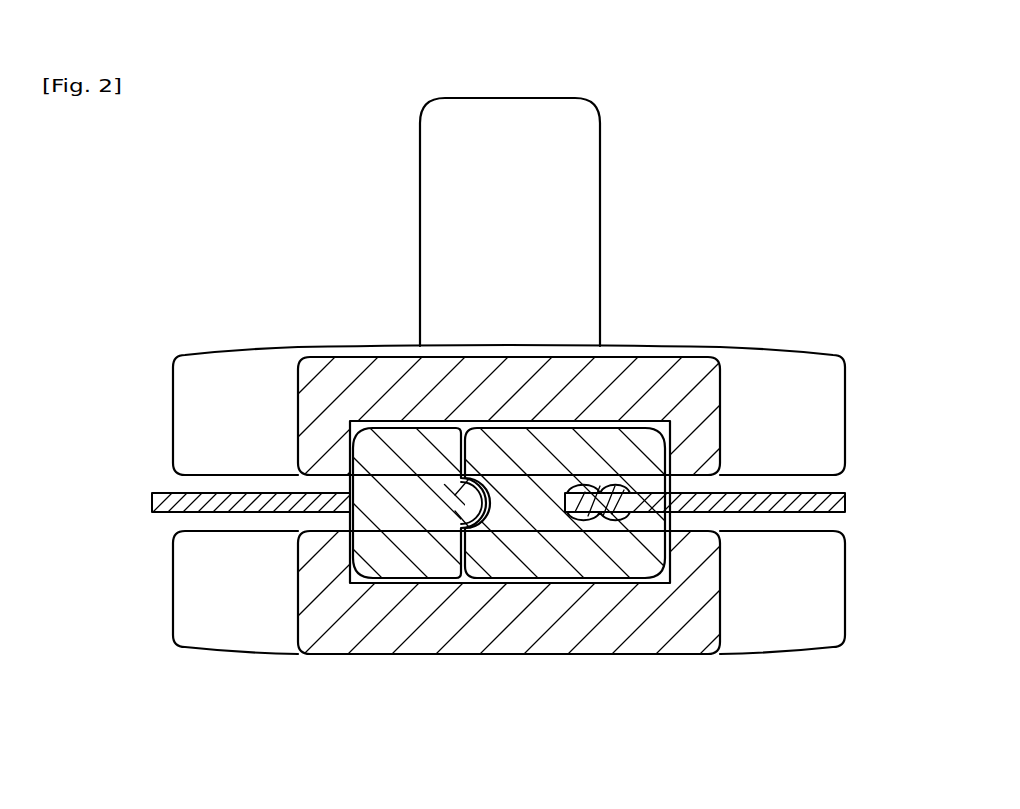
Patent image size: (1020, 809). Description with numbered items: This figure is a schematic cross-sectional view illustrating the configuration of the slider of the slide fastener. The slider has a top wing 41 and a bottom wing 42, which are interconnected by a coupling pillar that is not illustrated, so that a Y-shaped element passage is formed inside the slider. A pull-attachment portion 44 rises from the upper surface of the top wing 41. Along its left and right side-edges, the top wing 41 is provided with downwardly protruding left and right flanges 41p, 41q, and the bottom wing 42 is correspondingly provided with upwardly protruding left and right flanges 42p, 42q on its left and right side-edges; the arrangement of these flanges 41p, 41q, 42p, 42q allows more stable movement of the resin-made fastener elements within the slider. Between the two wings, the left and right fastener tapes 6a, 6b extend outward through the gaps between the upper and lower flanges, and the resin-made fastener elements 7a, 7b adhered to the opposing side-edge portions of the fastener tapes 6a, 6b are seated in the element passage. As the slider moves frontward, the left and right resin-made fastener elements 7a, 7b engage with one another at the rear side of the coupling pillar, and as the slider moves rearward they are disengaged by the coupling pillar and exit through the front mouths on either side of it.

The stem 44 is at (418, 244).
The top wing 41 is at (653, 372).
The left flange 41p is at (318, 450).
The right flange 41q is at (705, 450).
The bottom wing 42 is at (587, 647).
The left flange 42p is at (310, 548).
The right flange 42q is at (697, 547).
The fastener tape 6a is at (172, 493).
The fastener tape 6b is at (845, 494).
The resin-made fastener element 7a is at (437, 558).
The resin-made fastener element 7b is at (582, 563).